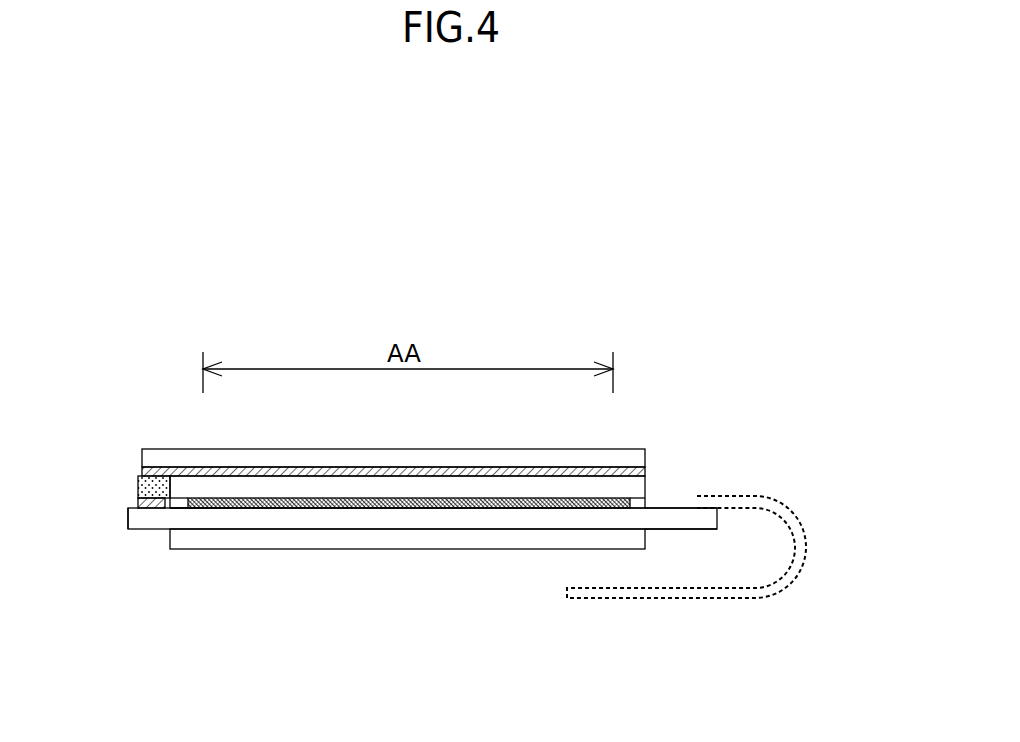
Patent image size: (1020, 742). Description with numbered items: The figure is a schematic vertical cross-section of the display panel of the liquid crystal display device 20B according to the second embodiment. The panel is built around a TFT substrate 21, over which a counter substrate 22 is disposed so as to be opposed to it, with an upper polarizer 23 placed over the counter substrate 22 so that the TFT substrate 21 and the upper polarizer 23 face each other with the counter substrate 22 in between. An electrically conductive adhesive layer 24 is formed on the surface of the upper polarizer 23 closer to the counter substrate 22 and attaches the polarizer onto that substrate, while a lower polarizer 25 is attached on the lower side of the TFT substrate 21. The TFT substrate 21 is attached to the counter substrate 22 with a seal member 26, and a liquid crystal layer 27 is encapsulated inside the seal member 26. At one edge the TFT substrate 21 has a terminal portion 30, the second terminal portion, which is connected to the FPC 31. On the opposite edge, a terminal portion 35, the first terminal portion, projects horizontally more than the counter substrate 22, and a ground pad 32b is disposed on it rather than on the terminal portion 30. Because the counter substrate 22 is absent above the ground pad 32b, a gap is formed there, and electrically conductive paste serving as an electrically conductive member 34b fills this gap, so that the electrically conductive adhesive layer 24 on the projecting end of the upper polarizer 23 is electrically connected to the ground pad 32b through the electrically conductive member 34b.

The liquid crystal display device 20B is at (763, 383).
The TFT substrate 21 is at (137, 522).
The counter substrate 22 is at (640, 487).
The upper polarizer 23 is at (642, 458).
The electrically conductive adhesive layer 24 is at (640, 473).
The lower polarizer 25 is at (175, 540).
The seal member 26 is at (642, 503).
The liquid crystal layer 27 is at (205, 507).
The terminal portion 30 is at (685, 518).
The FPC 31 is at (800, 525).
The ground pad 32b is at (140, 503).
The electrically conductive member 34b is at (150, 488).
The terminal portion 35 is at (140, 530).